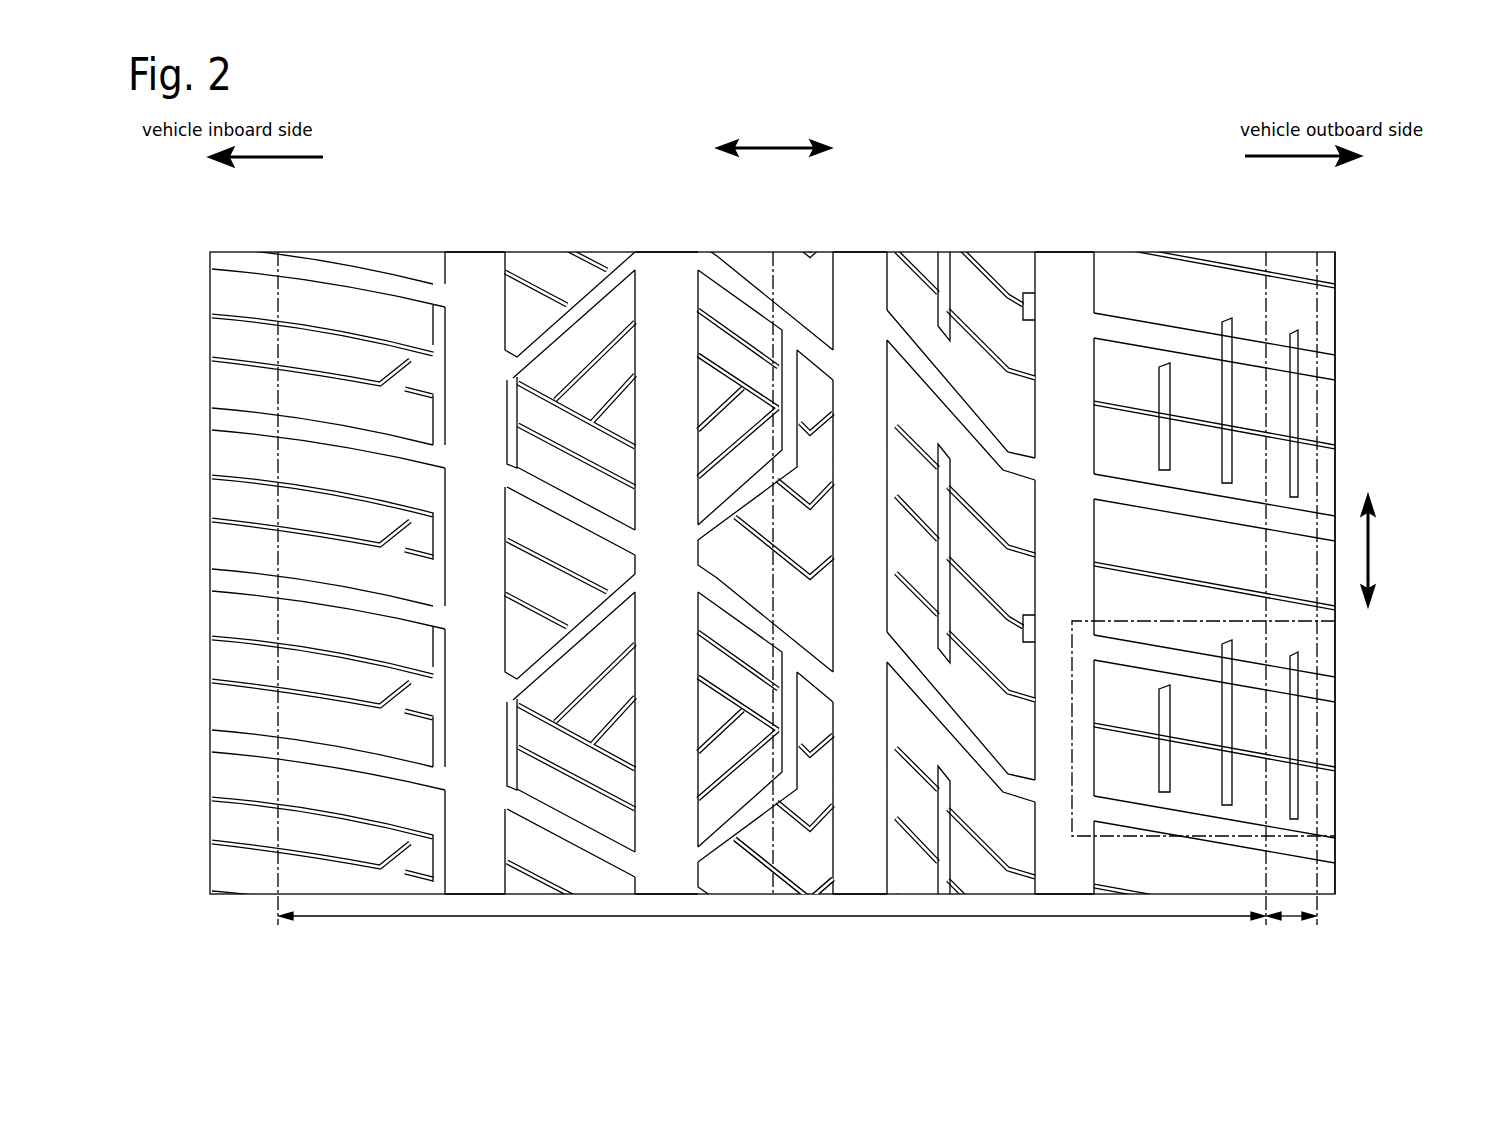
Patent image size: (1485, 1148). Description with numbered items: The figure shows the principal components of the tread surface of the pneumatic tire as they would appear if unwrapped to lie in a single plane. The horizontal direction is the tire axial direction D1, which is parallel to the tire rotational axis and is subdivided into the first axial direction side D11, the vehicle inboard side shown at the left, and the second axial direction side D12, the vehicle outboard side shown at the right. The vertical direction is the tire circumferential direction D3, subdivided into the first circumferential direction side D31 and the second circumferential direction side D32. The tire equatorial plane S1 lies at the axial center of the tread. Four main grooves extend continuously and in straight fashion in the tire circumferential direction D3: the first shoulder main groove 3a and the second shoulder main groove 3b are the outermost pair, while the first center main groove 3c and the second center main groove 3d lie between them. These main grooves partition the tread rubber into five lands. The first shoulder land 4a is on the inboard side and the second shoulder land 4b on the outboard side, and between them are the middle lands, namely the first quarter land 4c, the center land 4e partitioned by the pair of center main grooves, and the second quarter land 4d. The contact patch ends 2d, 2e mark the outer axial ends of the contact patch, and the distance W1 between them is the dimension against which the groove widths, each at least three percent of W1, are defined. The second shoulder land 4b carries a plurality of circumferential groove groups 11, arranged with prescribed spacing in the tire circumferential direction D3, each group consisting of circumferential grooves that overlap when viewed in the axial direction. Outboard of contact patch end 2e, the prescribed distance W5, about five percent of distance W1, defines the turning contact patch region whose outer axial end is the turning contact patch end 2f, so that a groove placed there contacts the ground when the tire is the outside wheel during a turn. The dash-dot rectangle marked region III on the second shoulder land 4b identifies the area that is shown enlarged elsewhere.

The first shoulder land 4a is at (210, 241).
The first quarter land 4c is at (505, 241).
The center land 4e is at (833, 241).
The second quarter land 4d is at (887, 241).
The second shoulder land 4b is at (1335, 241).
The first shoulder main groove 3a is at (484, 268).
The first center main groove 3c is at (674, 268).
The second center main groove 3d is at (867, 268).
The second shoulder main groove 3b is at (1070, 268).
The contact patch end 2d is at (276, 301).
The contact patch end 2e is at (1268, 322).
The turning contact patch end 2f is at (1337, 300).
The circumferential groove group 11 is at (1304, 410).
The tire equatorial plane S1 is at (776, 838).
The region III is at (1337, 791).
The tire axial direction D1 is at (774, 140).
The first axial direction side D11 is at (244, 156).
The second axial direction side D12 is at (1326, 156).
The tire circumferential direction D3 is at (1380, 550).
The first circumferential direction side D31 is at (1374, 484).
The second circumferential direction side D32 is at (1374, 626).
The distance between contact patch ends W1 is at (772, 932).
The prescribed distance W5 is at (1291, 929).